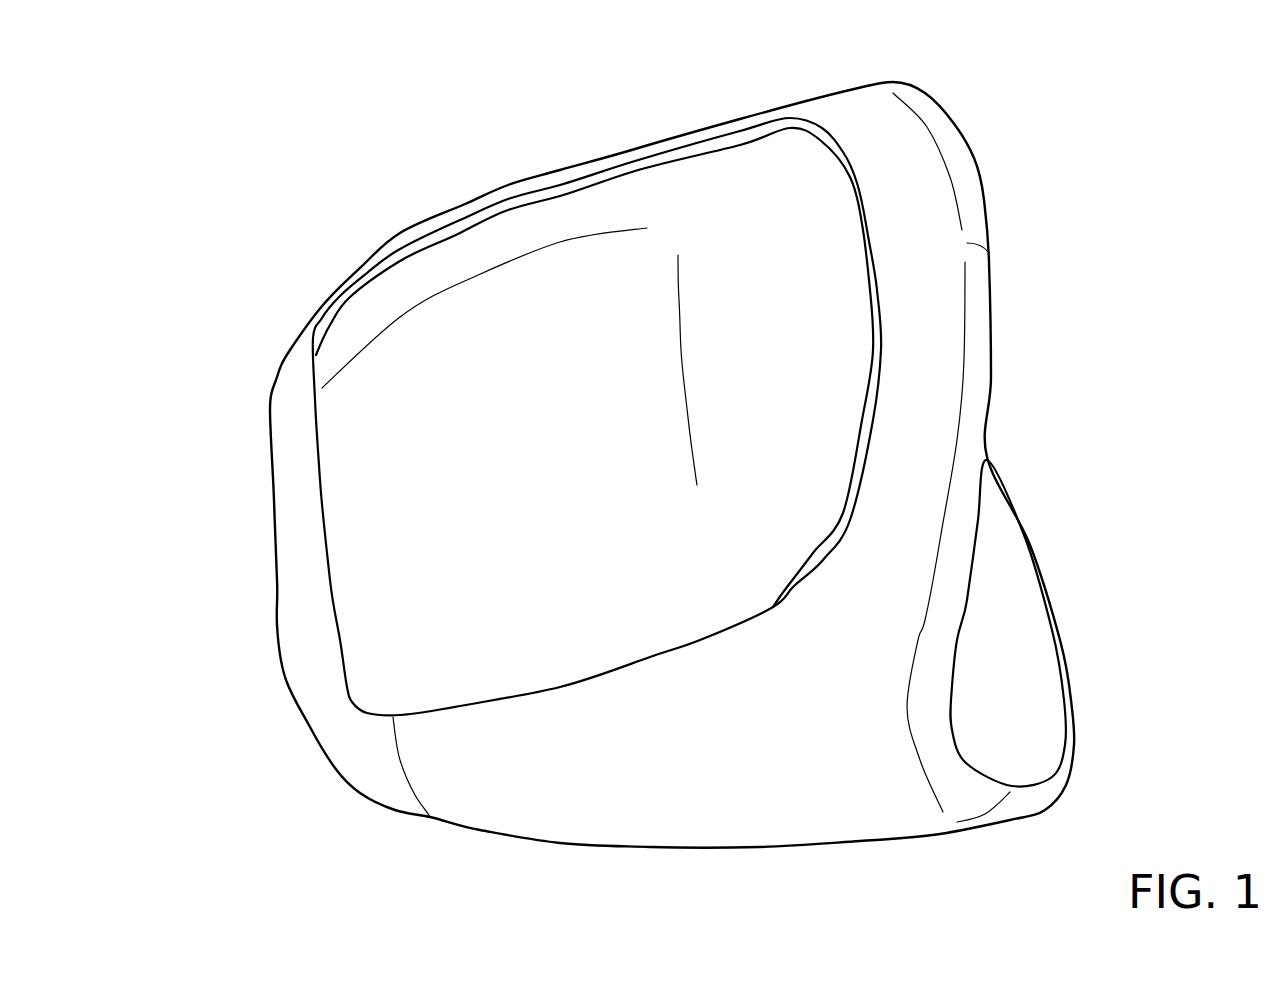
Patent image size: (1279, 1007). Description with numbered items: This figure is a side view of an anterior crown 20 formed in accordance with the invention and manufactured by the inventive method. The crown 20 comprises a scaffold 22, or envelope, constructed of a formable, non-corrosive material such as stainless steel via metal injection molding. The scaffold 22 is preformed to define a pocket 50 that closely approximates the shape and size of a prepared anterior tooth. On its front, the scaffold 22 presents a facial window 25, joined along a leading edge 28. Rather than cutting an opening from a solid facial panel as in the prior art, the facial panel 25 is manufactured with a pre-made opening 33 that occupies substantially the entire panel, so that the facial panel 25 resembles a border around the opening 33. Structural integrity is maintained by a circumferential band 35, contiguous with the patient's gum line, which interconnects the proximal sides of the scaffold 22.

The anterior crown 20 is at (1030, 47).
The scaffold 22 is at (667, 145).
The facial window 25 is at (463, 197).
The leading edge 28 is at (277, 583).
The opening 33 is at (507, 549).
The circumferential band 35 is at (985, 200).
The pocket 50 is at (1043, 557).